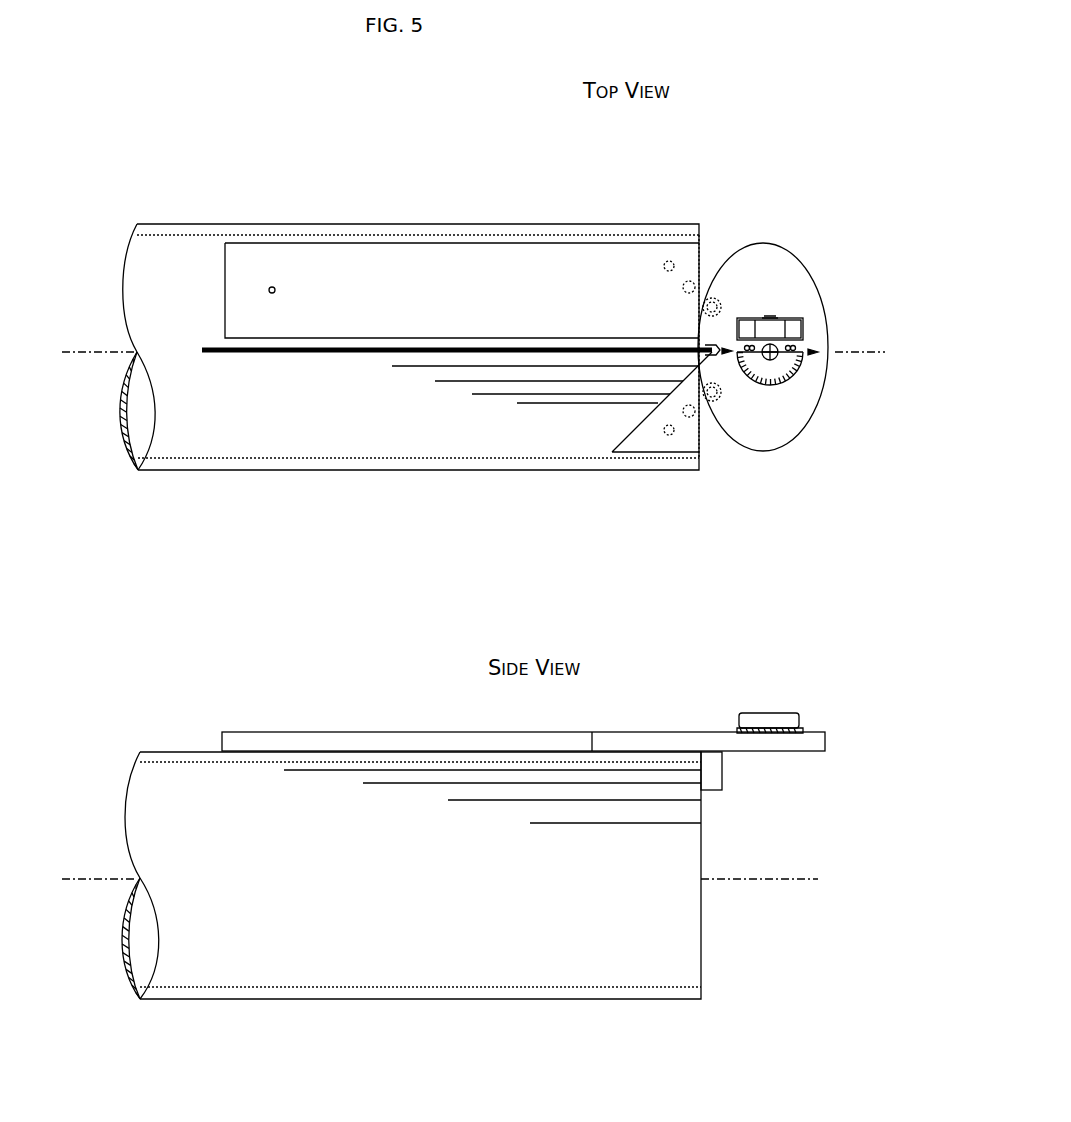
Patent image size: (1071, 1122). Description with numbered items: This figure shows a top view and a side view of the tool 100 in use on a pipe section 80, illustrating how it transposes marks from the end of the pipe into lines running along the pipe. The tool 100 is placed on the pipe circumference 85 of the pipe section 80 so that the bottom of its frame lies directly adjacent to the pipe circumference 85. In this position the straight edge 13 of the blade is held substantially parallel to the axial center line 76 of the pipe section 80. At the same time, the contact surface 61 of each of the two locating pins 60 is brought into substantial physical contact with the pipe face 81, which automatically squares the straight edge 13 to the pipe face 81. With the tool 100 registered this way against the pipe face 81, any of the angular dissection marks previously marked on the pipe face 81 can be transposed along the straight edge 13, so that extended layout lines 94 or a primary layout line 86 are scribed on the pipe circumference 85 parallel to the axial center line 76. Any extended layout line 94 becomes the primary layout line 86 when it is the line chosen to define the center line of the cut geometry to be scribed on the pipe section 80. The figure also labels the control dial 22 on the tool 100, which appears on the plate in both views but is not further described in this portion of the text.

The straight edge 13 is at (372, 348).
The control dial 22 is at (800, 312).
The locating pins 60 is at (718, 300).
The contact surface 61 is at (697, 292).
The axial center line 76 is at (76, 355).
The pipe section 80 is at (203, 207).
The pipe face 81 is at (701, 462).
The pipe circumference 85 is at (278, 373).
The primary layout line 86 is at (203, 355).
The extended layout lines 94 is at (402, 366).
The tool 100 is at (827, 198).